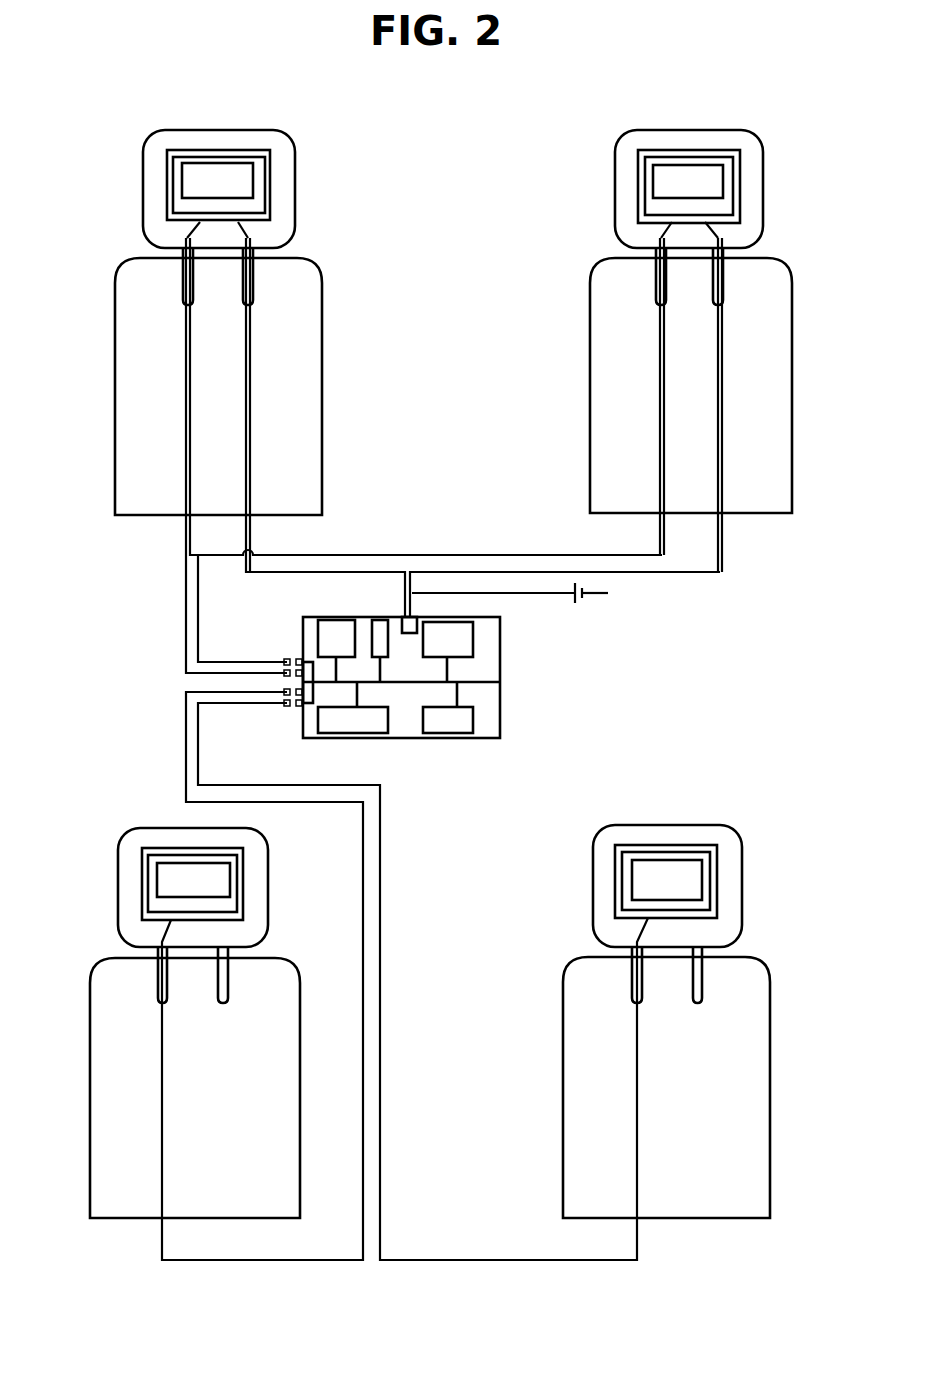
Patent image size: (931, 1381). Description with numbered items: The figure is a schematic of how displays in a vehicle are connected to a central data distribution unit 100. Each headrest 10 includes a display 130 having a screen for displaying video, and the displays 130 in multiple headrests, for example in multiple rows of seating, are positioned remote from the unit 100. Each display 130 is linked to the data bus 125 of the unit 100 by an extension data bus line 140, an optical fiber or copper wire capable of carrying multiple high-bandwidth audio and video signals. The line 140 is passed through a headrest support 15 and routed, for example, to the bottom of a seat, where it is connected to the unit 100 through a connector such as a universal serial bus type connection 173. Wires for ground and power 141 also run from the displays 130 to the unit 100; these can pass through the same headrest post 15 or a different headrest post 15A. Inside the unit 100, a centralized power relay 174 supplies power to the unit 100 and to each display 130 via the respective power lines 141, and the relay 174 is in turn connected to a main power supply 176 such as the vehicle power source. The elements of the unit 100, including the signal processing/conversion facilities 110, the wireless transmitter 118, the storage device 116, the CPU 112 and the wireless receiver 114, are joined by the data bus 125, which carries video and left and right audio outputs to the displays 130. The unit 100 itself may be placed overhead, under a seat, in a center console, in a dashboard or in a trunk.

The headrest 10 is at (175, 130).
The display 130 is at (213, 173).
The headrest support 15 is at (182, 290).
The headrest post 15A is at (255, 288).
The extension data bus line 140 is at (187, 397).
The wires for ground and power 141 is at (249, 370).
The data distribution unit 100 is at (418, 698).
The data bus 125 is at (487, 678).
The wireless transmitter 118 is at (332, 632).
The signal processing/conversion facilities 110 is at (378, 623).
The power relay 174 is at (403, 625).
The main power supply 176 is at (584, 604).
The storage device 116 is at (467, 643).
The CPU 112 is at (462, 733).
The wireless receiver 114 is at (340, 735).
The universal serial bus type connection 173 is at (298, 656).